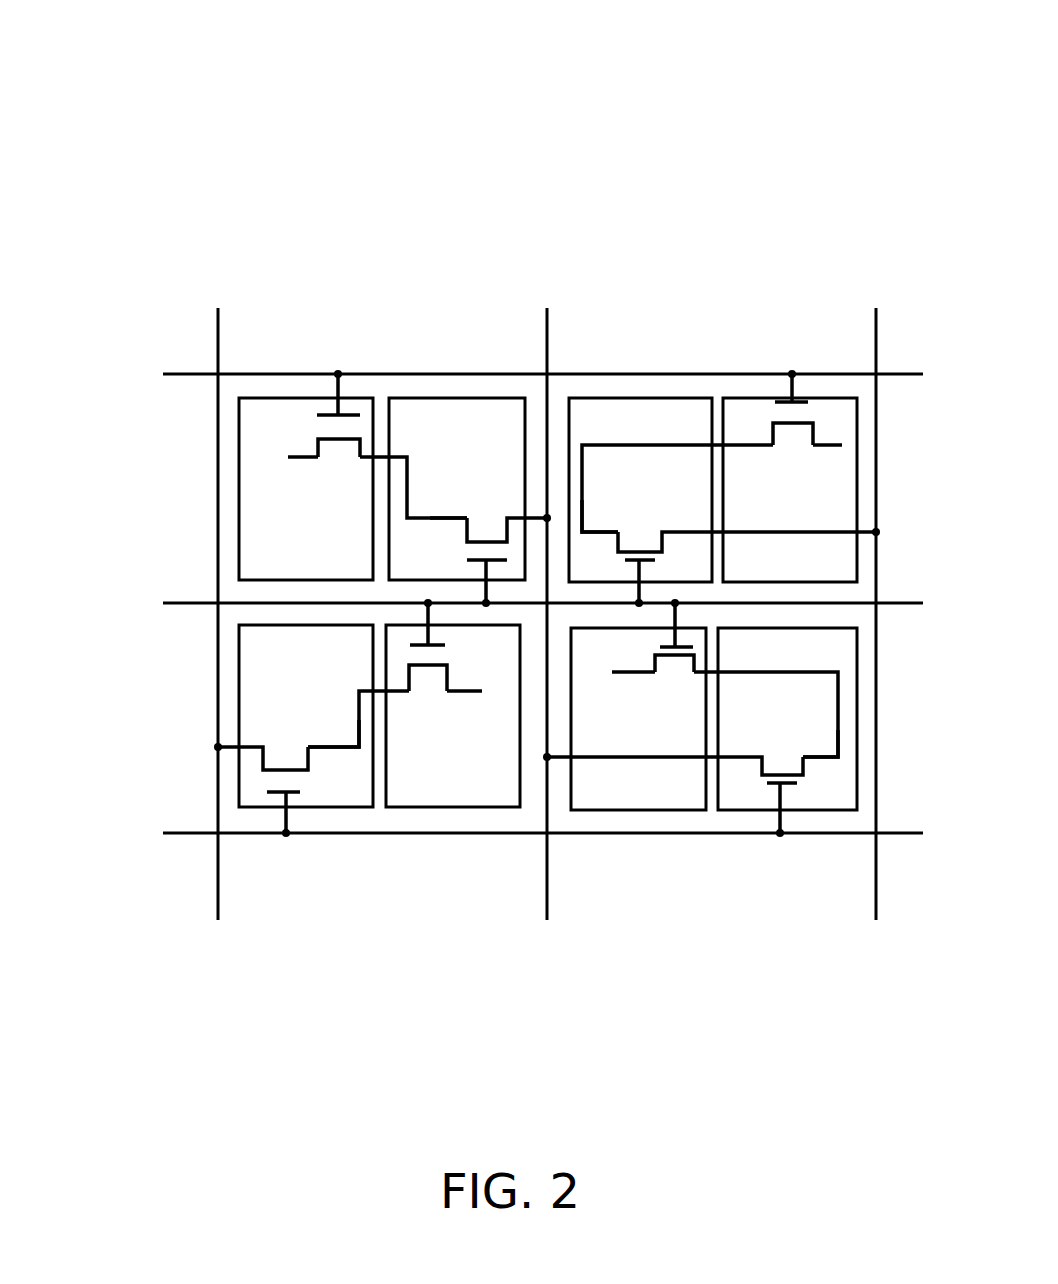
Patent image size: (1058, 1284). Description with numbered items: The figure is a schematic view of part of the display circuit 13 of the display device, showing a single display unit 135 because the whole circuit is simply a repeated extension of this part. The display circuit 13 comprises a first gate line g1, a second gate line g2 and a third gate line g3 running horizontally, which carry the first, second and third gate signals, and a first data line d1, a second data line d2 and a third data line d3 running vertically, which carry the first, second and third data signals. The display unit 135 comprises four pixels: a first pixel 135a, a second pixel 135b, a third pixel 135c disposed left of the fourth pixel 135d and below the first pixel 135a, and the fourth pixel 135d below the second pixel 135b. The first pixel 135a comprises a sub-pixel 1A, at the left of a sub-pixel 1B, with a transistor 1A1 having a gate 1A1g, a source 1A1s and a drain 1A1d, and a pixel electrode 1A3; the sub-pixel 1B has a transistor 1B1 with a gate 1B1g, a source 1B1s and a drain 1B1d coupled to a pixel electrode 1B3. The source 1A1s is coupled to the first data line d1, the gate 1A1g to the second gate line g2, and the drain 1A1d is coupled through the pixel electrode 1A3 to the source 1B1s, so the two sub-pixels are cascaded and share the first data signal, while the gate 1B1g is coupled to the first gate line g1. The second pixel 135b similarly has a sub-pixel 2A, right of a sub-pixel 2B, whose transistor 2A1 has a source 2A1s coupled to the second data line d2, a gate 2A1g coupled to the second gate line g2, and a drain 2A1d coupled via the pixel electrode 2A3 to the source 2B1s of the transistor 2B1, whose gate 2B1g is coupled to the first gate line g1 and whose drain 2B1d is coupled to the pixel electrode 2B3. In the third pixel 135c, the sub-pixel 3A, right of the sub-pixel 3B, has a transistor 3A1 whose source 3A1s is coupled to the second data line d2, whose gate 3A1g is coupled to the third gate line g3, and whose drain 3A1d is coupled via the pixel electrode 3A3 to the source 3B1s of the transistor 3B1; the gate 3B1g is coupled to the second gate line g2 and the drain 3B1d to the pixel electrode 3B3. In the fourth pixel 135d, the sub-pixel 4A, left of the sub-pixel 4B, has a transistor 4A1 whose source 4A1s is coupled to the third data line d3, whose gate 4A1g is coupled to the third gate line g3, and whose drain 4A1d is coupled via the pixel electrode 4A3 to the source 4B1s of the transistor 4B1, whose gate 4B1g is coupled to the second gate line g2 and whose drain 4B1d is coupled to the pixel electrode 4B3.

The display circuit 13 is at (668, 55).
The display unit 135 is at (873, 975).
The first pixel 135a is at (857, 308).
The second pixel 135b is at (522, 308).
The third pixel 135c is at (843, 895).
The fourth pixel 135d is at (510, 895).
The first data line d1 is at (878, 322).
The second data line d2 is at (550, 322).
The third data line d3 is at (216, 318).
The first gate line g1 is at (188, 374).
The second gate line g2 is at (188, 603).
The third gate line g3 is at (188, 833).
The sub-pixel 1A is at (580, 367).
The sub-pixel 1B is at (723, 367).
The sub-pixel 2A is at (512, 367).
The sub-pixel 2B is at (248, 367).
The sub-pixel 3A is at (843, 838).
The sub-pixel 3B is at (700, 838).
The sub-pixel 4A is at (363, 838).
The sub-pixel 4B is at (510, 838).
The transistor 1A1 is at (726, 526).
The source 1A1s is at (692, 532).
The drain 1A1d is at (596, 534).
The gate 1A1g is at (643, 560).
The pixel electrode 1A3 is at (673, 429).
The transistor 1B1 is at (795, 441).
The source 1B1s is at (738, 447).
The drain 1B1d is at (829, 446).
The gate 1B1g is at (786, 403).
The pixel electrode 1B3 is at (833, 576).
The transistor 2A1 is at (455, 531).
The source 2A1s is at (528, 518).
The drain 2A1d is at (452, 518).
The gate 2A1g is at (478, 560).
The pixel electrode 2A3 is at (493, 439).
The transistor 2B1 is at (306, 450).
The source 2B1s is at (364, 458).
The drain 2B1d is at (281, 488).
The gate 2B1g is at (328, 417).
The pixel electrode 2B3 is at (328, 573).
The transistor 3A1 is at (697, 754).
The source 3A1s is at (752, 760).
The drain 3A1d is at (836, 756).
The gate 3A1g is at (789, 783).
The pixel electrode 3A3 is at (798, 666).
The transistor 3B1 is at (639, 669).
The source 3B1s is at (698, 673).
The drain 3B1d is at (618, 691).
The gate 3B1g is at (662, 647).
The pixel electrode 3B3 is at (660, 797).
The transistor 4A1 is at (311, 764).
The source 4A1s is at (242, 748).
The drain 4A1d is at (312, 748).
The gate 4A1g is at (302, 792).
The pixel electrode 4A3 is at (360, 664).
The transistor 4B1 is at (456, 683).
The source 4B1s is at (393, 692).
The drain 4B1d is at (483, 708).
The gate 4B1g is at (438, 646).
The pixel electrode 4B3 is at (463, 784).